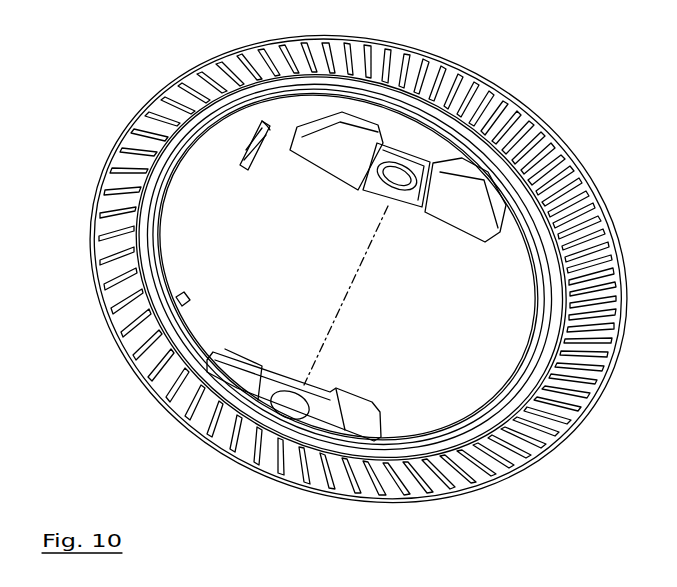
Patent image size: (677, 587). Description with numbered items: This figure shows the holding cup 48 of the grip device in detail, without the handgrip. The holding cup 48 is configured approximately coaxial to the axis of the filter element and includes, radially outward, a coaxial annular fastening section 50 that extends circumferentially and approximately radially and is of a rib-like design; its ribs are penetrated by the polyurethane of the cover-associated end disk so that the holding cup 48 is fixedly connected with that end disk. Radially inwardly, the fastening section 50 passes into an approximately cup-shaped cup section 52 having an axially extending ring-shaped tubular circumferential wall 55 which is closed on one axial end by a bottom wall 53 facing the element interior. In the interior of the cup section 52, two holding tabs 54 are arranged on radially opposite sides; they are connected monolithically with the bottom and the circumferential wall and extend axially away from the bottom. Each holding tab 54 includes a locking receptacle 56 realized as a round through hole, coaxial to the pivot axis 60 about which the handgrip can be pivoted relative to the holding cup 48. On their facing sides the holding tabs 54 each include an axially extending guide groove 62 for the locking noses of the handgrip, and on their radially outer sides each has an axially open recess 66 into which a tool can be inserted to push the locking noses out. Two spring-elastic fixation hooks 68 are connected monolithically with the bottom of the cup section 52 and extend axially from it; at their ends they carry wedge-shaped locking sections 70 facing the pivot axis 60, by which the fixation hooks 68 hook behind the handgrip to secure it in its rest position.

The holding cup 48 is at (110, 78).
The fastening section 50 is at (130, 127).
The cup section 52 is at (505, 437).
The bottom wall 53 is at (520, 473).
The holding tab 54 is at (445, 215).
The circumferential wall 55 is at (535, 245).
The locking receptacle 56 is at (408, 207).
The pivot axis 60 is at (355, 287).
The guide groove 62 is at (370, 200).
The recess 66 is at (288, 358).
The fixation hook 68 is at (247, 163).
The locking section 70 is at (268, 135).